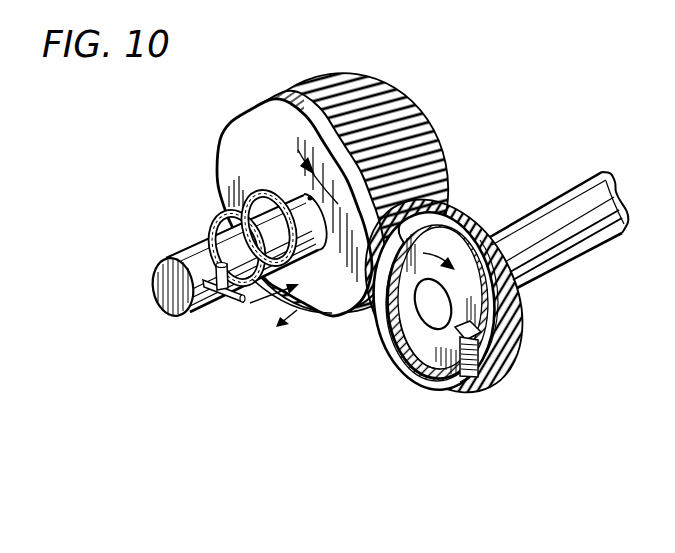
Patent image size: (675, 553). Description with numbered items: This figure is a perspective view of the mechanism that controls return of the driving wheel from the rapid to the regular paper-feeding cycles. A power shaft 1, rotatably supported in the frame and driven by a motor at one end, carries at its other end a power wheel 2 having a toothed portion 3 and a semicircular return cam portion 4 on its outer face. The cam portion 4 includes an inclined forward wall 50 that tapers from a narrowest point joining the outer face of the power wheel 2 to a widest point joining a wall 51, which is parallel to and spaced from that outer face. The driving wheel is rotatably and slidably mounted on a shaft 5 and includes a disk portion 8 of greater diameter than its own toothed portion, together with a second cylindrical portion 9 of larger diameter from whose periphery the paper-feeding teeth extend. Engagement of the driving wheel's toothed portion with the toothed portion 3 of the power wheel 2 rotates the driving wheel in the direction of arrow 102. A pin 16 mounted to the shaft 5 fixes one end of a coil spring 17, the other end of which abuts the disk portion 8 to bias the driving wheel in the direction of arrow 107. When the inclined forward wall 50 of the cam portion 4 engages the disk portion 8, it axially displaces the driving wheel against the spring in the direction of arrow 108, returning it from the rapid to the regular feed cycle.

The power shaft 1 is at (557, 214).
The power wheel 2 is at (522, 323).
The toothed portion 3 is at (437, 241).
The semicircular return cam portion 4 is at (422, 363).
The shaft 5 is at (172, 296).
The disk portion 8 is at (267, 102).
The second cylindrical portion 9 is at (381, 94).
The pin 16 is at (228, 305).
The coil spring 17 is at (210, 224).
The inclined forward wall 50 is at (389, 296).
The wall 51 is at (402, 347).
The direction of rotation of driving wheel 102 is at (335, 150).
The direction of spring bias 107 is at (250, 303).
The direction of axial displacement 108 is at (313, 299).